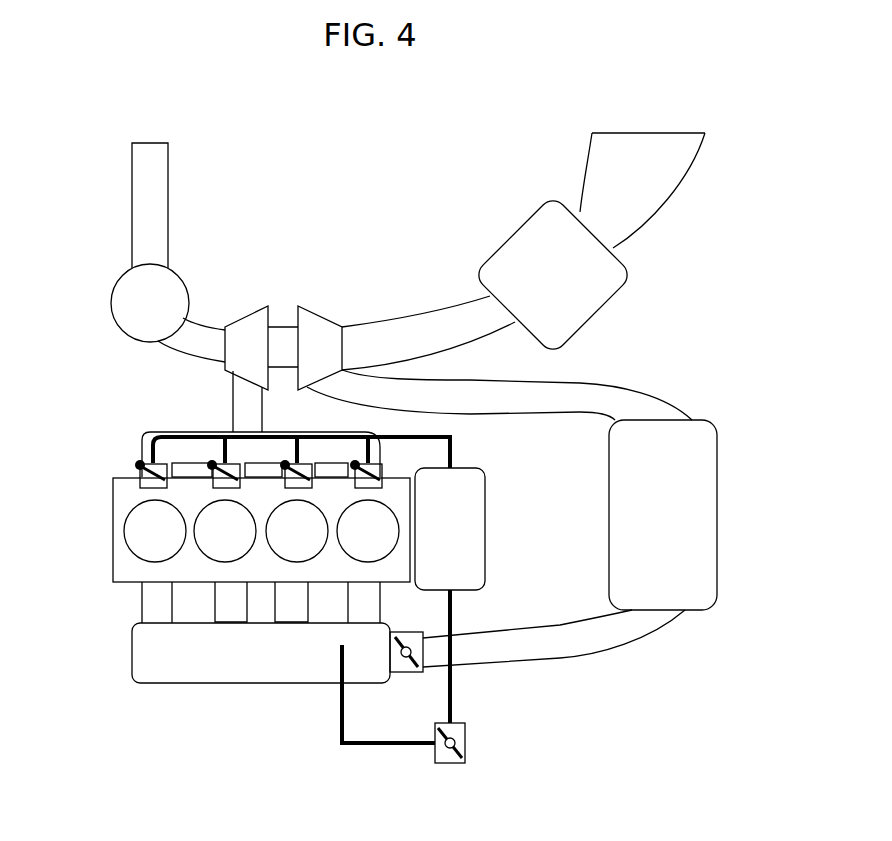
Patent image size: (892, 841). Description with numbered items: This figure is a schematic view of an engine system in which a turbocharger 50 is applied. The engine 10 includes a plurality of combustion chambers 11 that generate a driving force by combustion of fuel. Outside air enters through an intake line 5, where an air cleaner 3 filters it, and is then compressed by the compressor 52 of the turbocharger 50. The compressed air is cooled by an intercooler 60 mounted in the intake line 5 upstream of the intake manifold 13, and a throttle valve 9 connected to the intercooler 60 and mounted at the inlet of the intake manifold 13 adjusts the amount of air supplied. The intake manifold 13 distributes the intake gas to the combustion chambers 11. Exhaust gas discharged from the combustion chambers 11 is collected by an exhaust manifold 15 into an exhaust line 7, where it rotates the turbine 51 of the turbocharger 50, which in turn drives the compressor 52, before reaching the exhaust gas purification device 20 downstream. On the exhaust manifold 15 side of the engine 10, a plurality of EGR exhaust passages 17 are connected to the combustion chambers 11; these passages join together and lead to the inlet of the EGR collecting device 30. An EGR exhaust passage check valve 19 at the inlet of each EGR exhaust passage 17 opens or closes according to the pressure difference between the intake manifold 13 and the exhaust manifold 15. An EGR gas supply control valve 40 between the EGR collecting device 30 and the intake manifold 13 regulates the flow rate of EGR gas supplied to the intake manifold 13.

The air cleaner 3 is at (633, 275).
The intake line 5 is at (615, 388).
The exhaust line 7 is at (132, 200).
The throttle valve 9 is at (407, 672).
The engine 10 is at (235, 557).
The combustion chamber 11 is at (124, 528).
The intake manifold 13 is at (260, 683).
The exhaust manifold 15 is at (142, 440).
The EGR exhaust passage 17 is at (178, 432).
The EGR exhaust passage check valve 19 is at (125, 476).
The exhaust gas purification device 20 is at (111, 303).
The EGR collecting device 30 is at (485, 525).
The EGR gas supply control valve 40 is at (465, 743).
The turbocharger 50 is at (289, 298).
The turbine 51 is at (260, 317).
The compressor 52 is at (324, 314).
The intercooler 60 is at (609, 515).